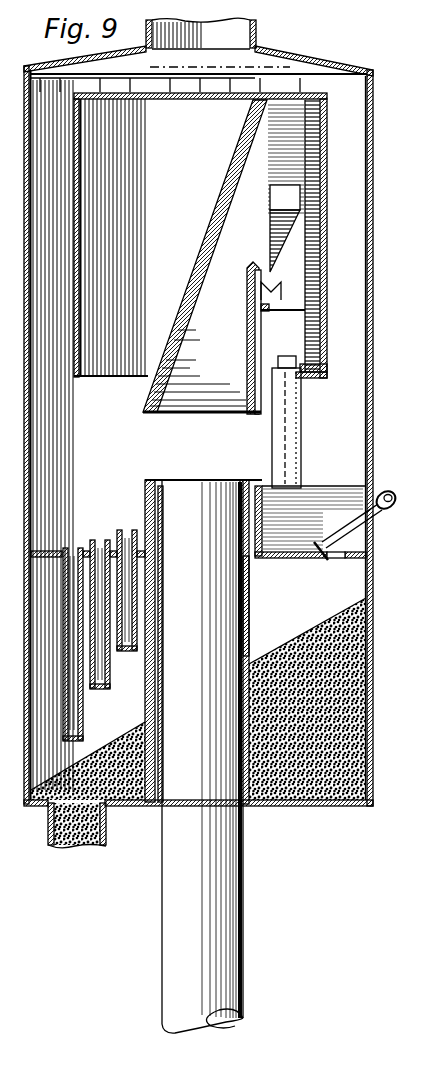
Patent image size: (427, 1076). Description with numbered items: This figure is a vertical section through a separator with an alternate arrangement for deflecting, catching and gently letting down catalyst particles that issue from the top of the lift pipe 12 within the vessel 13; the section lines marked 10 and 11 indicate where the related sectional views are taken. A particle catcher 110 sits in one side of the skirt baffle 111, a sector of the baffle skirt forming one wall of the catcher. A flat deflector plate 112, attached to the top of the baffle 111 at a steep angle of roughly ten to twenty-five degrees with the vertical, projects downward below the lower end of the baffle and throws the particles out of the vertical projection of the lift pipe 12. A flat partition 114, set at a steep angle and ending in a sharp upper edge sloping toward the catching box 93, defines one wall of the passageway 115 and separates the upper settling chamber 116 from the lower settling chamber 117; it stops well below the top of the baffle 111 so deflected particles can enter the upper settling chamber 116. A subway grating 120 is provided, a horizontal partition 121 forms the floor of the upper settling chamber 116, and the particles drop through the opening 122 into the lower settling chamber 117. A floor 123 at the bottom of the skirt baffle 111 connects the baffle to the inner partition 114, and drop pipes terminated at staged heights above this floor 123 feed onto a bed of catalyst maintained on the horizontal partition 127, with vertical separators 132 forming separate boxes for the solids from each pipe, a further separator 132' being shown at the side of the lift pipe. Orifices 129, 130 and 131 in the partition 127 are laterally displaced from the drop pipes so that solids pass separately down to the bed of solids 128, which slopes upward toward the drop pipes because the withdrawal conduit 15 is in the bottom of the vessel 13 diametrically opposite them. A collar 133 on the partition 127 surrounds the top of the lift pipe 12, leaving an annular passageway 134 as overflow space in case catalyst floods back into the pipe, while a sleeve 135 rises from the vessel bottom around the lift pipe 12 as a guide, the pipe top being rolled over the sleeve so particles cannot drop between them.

The section line / chimney outlet 10 is at (203, 67).
The housing section line 11 is at (18, 155).
The lift pipe 12 is at (246, 894).
The vessel 13 is at (398, 343).
The withdrawal conduit 15 is at (105, 833).
The catching box 93 is at (306, 272).
The particle catcher 110 is at (228, 186).
The skirt baffle 111 is at (64, 158).
The deflector plate 112 is at (200, 262).
The partition 114 is at (256, 392).
The passageway 115 is at (221, 385).
The upper settling chamber 116 is at (318, 272).
The lower settling chamber 117 is at (288, 343).
The subway grating 120 is at (306, 148).
The horizontal partition 121 is at (306, 304).
The opening 122 is at (308, 318).
The floor 123 is at (310, 382).
The horizontal partition 127 is at (314, 560).
The bed of solids 128 is at (320, 730).
The orifice 129 is at (344, 551).
The orifice 130 is at (83, 723).
The orifice 131 is at (108, 677).
The vertical separator 132 is at (146, 642).
The chamber 132' is at (331, 505).
The collar 133 is at (263, 530).
The annular passageway 134 is at (263, 508).
The sleeve 135 is at (250, 780).